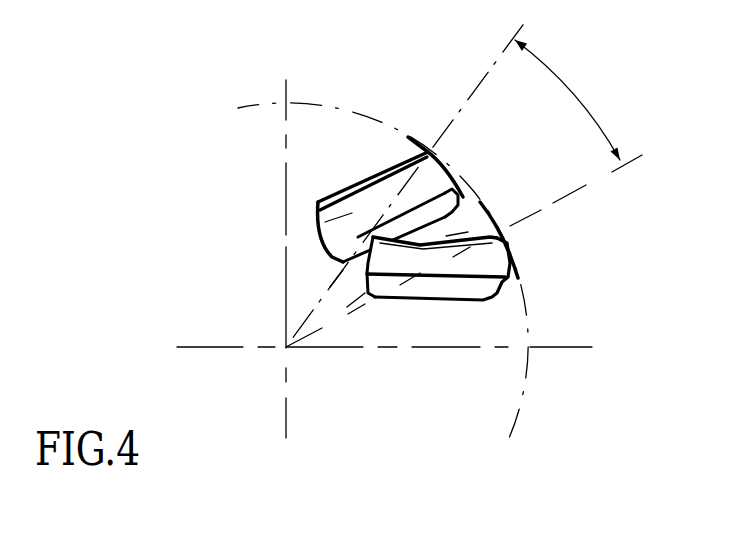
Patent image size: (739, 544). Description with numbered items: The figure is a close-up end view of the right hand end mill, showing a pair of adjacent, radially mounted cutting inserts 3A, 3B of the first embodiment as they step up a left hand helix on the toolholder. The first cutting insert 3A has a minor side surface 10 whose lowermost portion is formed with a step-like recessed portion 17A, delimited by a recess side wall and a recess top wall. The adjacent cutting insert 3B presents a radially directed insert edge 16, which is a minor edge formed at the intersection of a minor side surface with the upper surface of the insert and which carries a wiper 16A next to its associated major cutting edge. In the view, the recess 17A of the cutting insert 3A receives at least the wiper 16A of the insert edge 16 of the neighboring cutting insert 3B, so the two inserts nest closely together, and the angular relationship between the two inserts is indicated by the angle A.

The minor side surface 10 is at (318, 228).
The cutting insert 3A is at (445, 162).
The adjacent cutting insert 3B is at (490, 256).
The minor edge 16 is at (457, 230).
The wiper 16A is at (373, 237).
The recessed portion 17A is at (358, 238).
The angular offset between inserts A is at (567, 100).